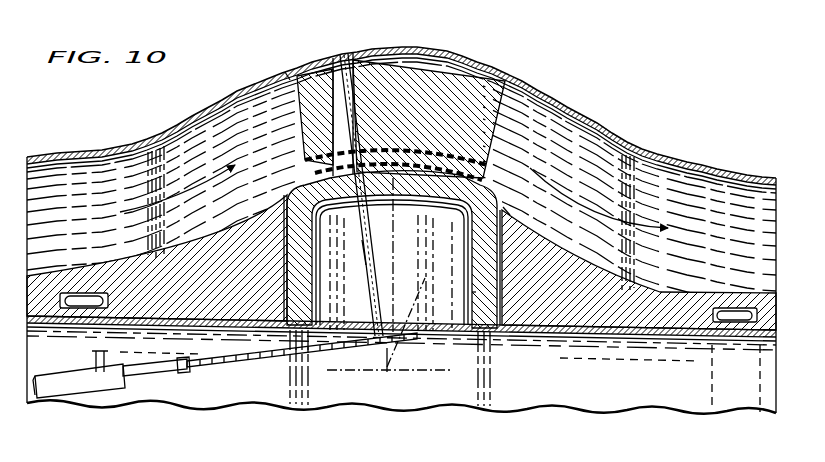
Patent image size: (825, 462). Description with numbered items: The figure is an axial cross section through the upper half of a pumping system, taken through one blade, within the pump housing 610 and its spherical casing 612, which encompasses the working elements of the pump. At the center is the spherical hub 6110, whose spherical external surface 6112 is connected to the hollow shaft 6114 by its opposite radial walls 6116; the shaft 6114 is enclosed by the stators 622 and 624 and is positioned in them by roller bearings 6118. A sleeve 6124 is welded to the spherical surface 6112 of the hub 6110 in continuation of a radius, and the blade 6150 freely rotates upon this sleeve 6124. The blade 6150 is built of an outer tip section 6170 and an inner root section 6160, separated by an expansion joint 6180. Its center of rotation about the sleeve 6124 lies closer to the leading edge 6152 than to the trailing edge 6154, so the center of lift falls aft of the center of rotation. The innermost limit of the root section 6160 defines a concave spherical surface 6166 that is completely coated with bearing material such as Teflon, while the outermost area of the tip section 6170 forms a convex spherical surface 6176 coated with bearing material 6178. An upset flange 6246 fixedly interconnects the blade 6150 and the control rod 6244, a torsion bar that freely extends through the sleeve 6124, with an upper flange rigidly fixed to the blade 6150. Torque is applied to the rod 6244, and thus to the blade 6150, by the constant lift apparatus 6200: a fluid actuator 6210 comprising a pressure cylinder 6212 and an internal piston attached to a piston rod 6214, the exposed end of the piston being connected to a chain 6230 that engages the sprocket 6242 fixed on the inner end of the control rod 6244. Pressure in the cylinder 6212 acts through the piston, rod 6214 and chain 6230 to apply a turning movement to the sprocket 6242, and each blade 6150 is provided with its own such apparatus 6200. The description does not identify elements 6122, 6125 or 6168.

The pump housing 610 is at (682, 156).
The spherical casing 612 is at (366, 53).
The stator 622 is at (43, 292).
The stator 624 is at (680, 305).
The spherical hub 6110 is at (468, 228).
The spherical external surface 6112 is at (503, 207).
The shaft 6114 is at (232, 332).
The radial walls 6116 is at (472, 292).
The roller bearings 6118 is at (85, 297).
The cavity inner liner 6122 is at (350, 225).
The sleeve 6124 is at (372, 72).
The cavity axis 6125 is at (394, 210).
The blade 6150 is at (550, 100).
The leading edge 6152 is at (230, 161).
The trailing edge 6154 is at (500, 134).
The root section 6160 is at (302, 186).
The concave spherical surface 6166 is at (432, 204).
The striped reinforcing band 6168 is at (480, 182).
The tip section 6170 is at (285, 72).
The convex spherical surface 6176 is at (500, 74).
The bearing material 6178 is at (455, 62).
The expansion joint 6180 is at (302, 162).
The constant lift apparatus 6200 is at (177, 390).
The fluid actuator 6210 is at (127, 384).
The pressure cylinder 6212 is at (72, 386).
The piston rod 6214 is at (153, 378).
The chain 6230 is at (305, 408).
The sprocket 6242 is at (388, 350).
The control rod 6244 is at (365, 245).
The upset flange 6246 is at (338, 58).